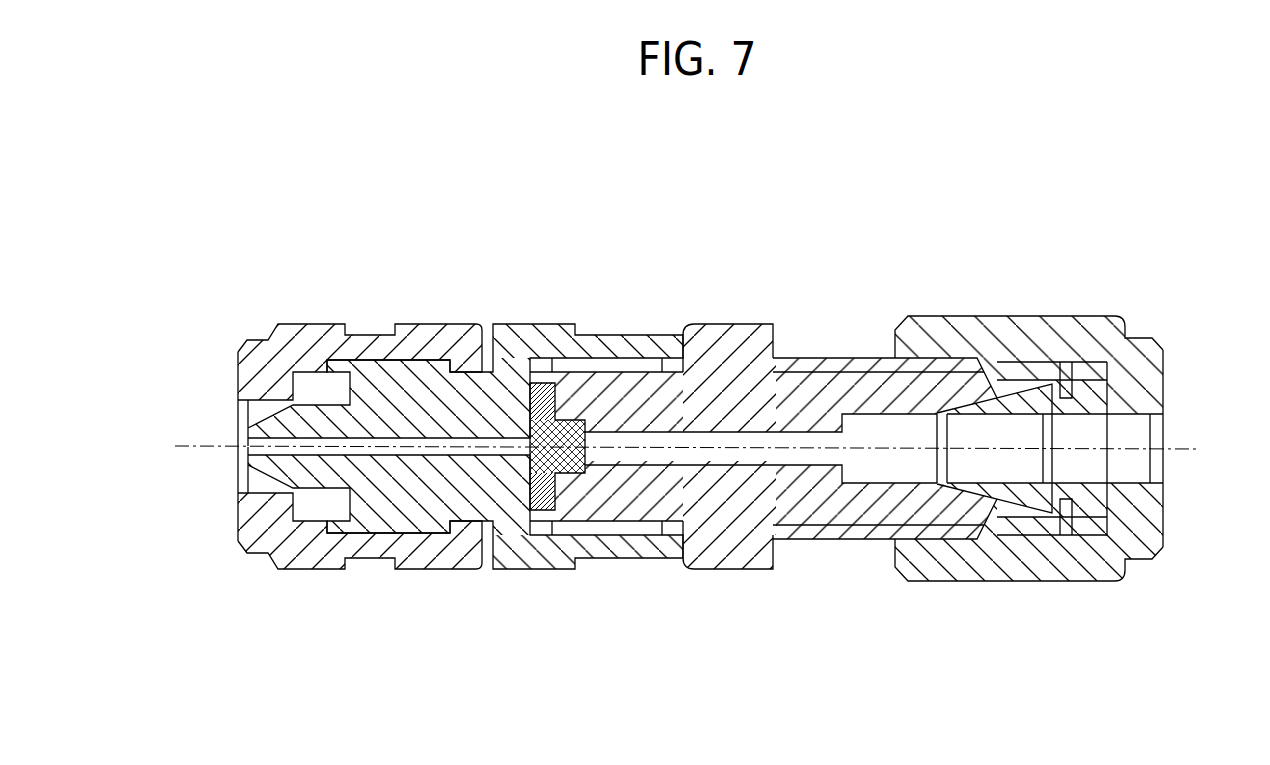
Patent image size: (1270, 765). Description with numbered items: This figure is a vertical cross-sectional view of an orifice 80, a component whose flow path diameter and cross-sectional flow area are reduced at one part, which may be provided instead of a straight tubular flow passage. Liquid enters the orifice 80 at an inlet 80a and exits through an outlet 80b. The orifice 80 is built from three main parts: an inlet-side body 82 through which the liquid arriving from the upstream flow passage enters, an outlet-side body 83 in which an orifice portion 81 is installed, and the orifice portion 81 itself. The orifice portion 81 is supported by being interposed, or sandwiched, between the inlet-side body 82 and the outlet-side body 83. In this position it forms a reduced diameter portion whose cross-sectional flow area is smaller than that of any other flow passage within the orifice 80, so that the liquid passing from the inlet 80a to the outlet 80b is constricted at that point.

The orifice 80 is at (952, 197).
The inlet 80a is at (240, 470).
The outlet 80b is at (1157, 467).
The orifice portion 81 is at (572, 478).
The inlet-side body 82 is at (403, 507).
The outlet-side body 83 is at (734, 540).